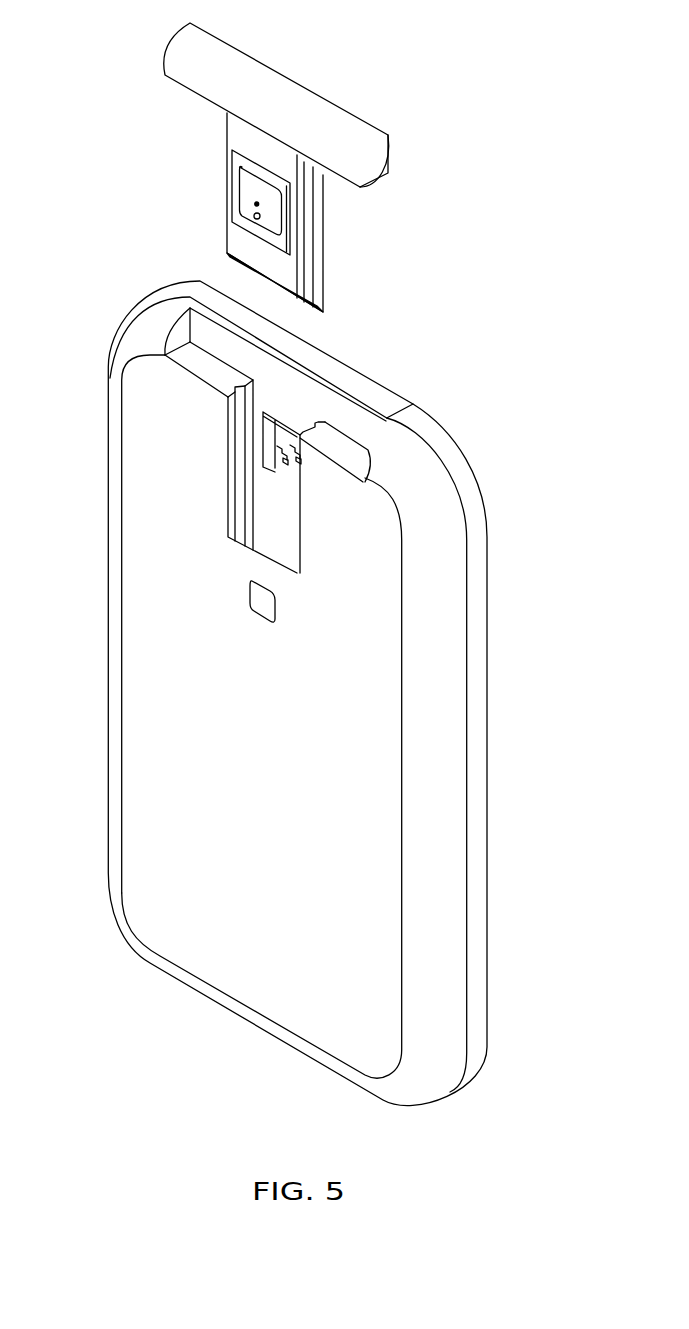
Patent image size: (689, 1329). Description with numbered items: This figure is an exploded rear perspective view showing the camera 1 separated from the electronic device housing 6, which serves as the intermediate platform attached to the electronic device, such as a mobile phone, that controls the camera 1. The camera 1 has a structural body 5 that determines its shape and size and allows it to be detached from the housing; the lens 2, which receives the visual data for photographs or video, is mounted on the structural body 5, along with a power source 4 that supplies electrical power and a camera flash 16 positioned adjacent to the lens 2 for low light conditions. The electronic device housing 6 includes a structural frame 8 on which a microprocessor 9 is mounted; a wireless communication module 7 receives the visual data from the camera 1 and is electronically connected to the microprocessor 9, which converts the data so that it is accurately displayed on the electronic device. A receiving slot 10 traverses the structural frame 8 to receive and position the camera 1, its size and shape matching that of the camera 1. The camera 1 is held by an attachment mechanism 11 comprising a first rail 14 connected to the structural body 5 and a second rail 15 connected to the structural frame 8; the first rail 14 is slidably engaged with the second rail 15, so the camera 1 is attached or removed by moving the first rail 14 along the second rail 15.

The camera 1 is at (405, 157).
The lens 2 is at (256, 204).
The power source 4 is at (235, 158).
The structural body 5 is at (190, 57).
The electronic device housing 6 is at (495, 888).
The wireless communication module 7 is at (262, 606).
The structural frame 8 is at (477, 560).
The microprocessor 9 is at (290, 478).
The receiving slot 10 is at (287, 408).
The attachment mechanism 11 is at (327, 282).
The first rail 14 is at (308, 237).
The second rail 15 is at (240, 432).
The camera flash 16 is at (256, 221).